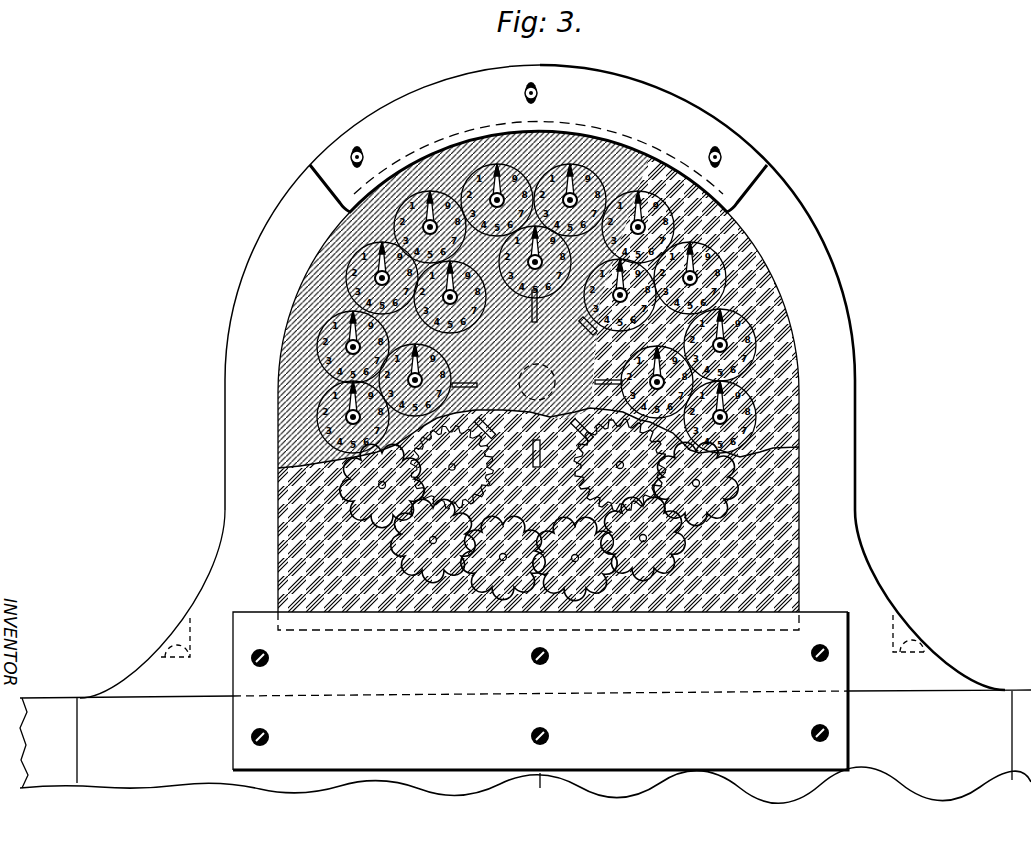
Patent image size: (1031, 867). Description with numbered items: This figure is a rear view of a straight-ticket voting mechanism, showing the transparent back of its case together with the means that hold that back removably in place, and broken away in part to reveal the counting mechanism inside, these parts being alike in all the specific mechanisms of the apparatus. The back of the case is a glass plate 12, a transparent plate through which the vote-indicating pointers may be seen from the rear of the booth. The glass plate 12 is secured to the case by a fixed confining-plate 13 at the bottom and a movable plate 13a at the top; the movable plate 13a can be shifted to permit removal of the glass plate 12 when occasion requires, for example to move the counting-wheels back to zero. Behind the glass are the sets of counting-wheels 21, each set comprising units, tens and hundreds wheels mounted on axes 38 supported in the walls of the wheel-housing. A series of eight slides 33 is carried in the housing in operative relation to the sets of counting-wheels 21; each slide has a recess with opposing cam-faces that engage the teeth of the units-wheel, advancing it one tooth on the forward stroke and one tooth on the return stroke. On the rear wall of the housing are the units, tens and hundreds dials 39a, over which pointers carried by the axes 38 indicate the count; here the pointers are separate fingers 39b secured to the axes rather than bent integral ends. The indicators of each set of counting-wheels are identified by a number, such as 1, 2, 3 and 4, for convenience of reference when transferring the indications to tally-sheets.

The indicator identification number 1 is at (375, 382).
The indicator identification number 2 is at (406, 252).
The indicator identification number 3 is at (533, 193).
The indicator identification number 4 is at (629, 261).
The glass plate 12 is at (747, 522).
The fixed confining-plate 13 is at (540, 691).
The movable plate 13a is at (658, 108).
The counting-wheels 21 is at (564, 513).
The slides 33 is at (541, 448).
The axes 38 is at (503, 473).
The units, tens and hundreds dials 39a is at (472, 309).
The separate fingers 39b is at (448, 328).